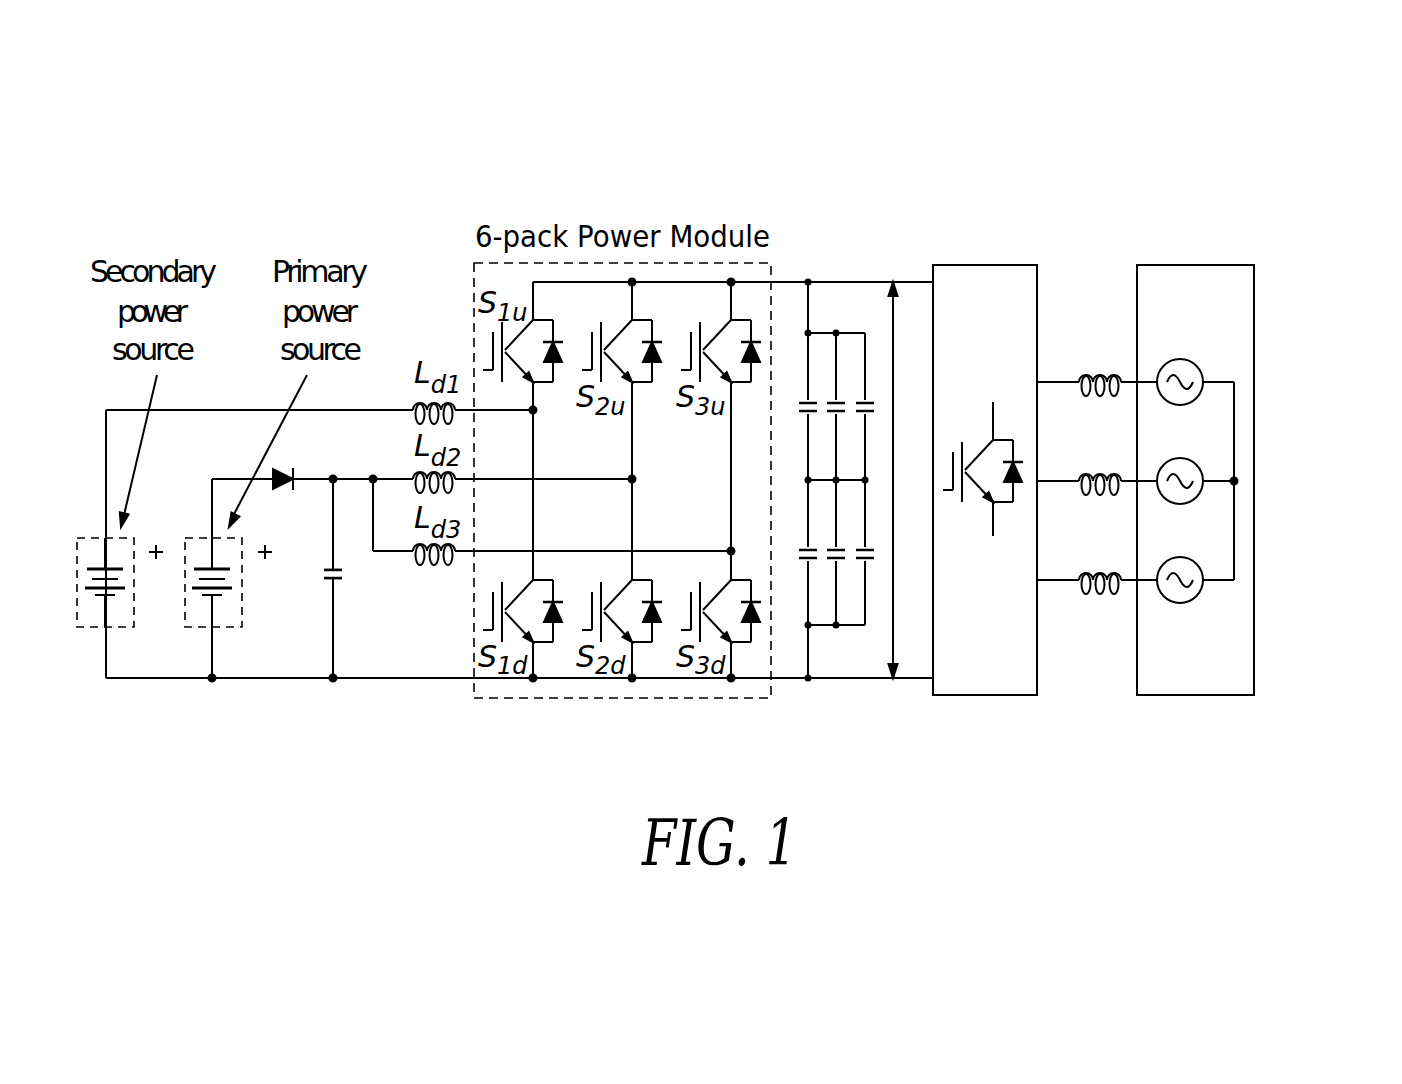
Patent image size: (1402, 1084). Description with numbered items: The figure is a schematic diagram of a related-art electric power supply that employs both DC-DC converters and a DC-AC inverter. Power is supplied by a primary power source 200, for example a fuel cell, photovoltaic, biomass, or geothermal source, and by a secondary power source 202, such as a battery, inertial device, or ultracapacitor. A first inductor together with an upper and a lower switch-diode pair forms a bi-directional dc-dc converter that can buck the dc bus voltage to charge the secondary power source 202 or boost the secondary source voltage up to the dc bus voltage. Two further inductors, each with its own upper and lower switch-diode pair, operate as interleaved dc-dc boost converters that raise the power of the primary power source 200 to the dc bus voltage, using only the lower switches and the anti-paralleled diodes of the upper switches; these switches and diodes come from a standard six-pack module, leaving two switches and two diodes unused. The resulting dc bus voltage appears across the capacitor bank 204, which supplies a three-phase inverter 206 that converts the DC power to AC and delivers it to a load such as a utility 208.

The primary power source 200 is at (198, 639).
The secondary power source 202 is at (90, 639).
The capacitor bank 204 is at (898, 253).
The three-phase inverter 206 is at (1055, 253).
The utility 208 is at (1273, 253).